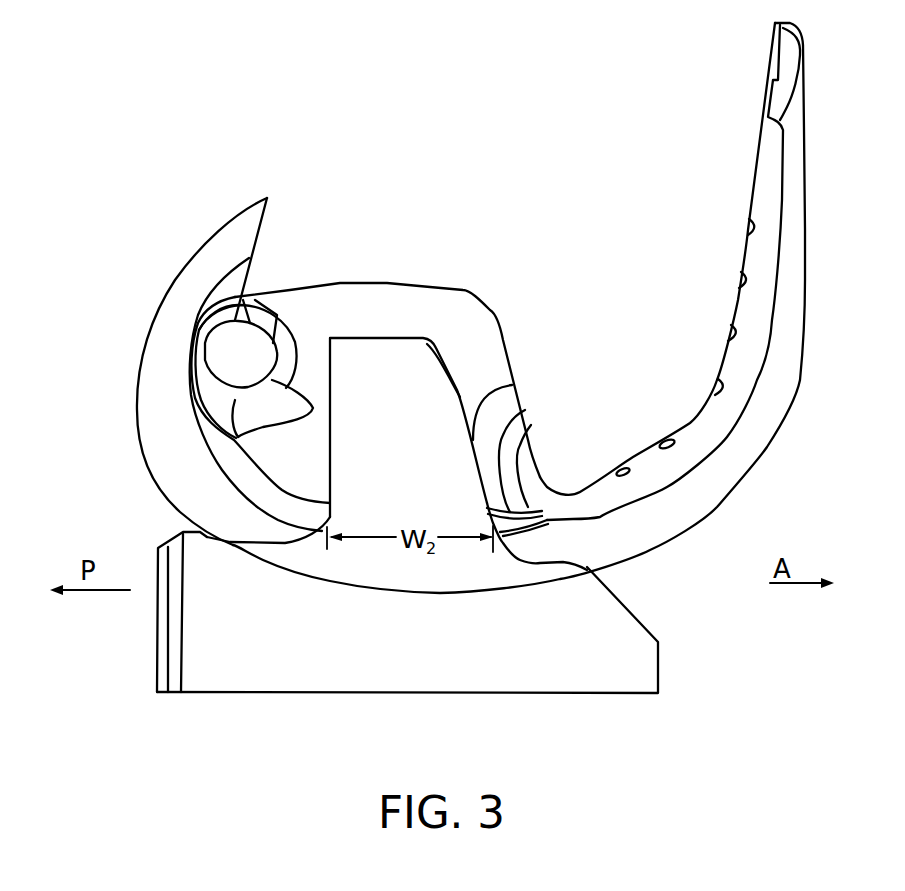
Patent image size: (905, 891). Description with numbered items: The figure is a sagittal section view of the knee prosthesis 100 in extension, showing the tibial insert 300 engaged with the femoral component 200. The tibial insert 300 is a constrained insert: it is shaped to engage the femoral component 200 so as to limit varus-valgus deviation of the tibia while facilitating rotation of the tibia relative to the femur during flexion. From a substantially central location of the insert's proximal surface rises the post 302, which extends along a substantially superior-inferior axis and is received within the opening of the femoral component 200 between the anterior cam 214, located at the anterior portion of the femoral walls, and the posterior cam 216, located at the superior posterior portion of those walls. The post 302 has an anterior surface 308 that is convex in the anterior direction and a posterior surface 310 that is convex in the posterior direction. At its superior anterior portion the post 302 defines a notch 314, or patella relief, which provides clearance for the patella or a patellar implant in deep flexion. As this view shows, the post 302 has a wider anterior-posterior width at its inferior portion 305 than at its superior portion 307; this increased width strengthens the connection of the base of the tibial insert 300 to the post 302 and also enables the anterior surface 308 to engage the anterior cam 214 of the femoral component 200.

The knee prosthesis 100 is at (331, 356).
The femoral component 200 is at (738, 483).
The anterior cam 214 is at (533, 457).
The posterior cam 216 is at (252, 343).
The tibial insert 300 is at (660, 654).
The post 302 is at (387, 348).
The inferior portion 305 is at (347, 490).
The superior portion 307 is at (342, 360).
The anterior surface 308 is at (463, 403).
The posterior surface 310 is at (332, 452).
The notch 314 is at (431, 362).